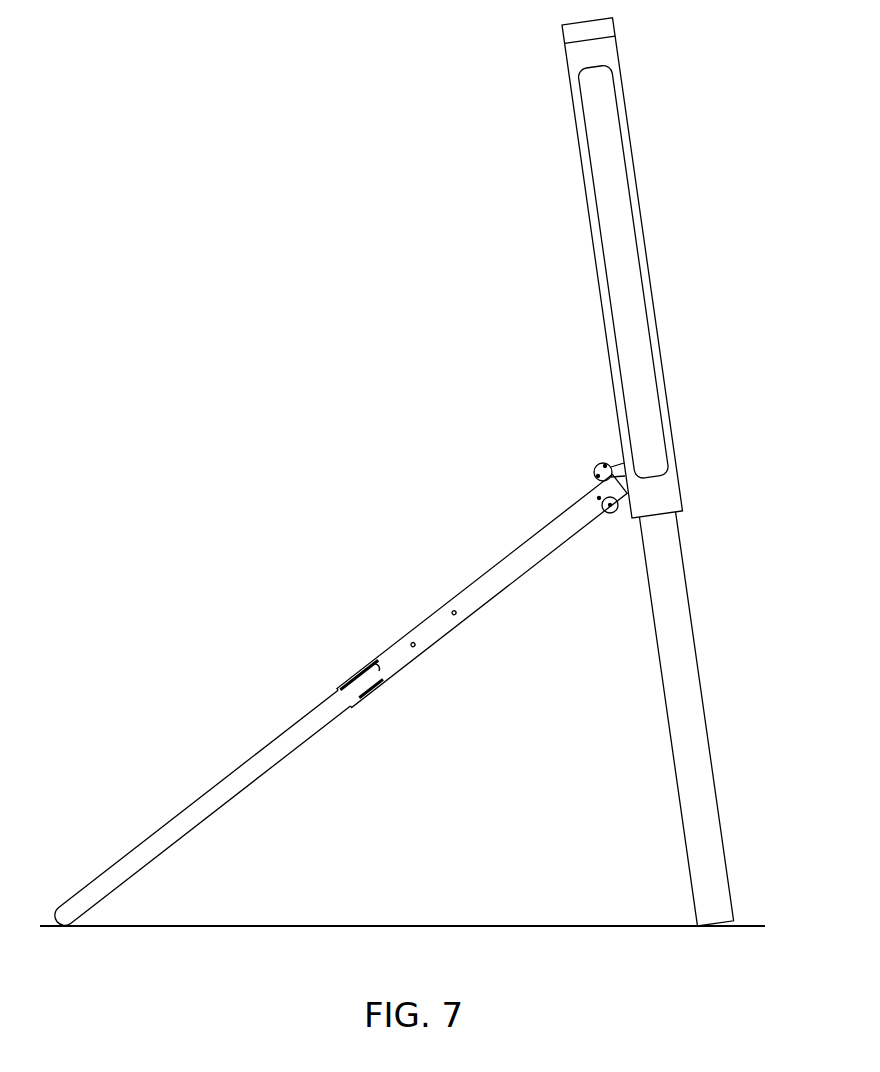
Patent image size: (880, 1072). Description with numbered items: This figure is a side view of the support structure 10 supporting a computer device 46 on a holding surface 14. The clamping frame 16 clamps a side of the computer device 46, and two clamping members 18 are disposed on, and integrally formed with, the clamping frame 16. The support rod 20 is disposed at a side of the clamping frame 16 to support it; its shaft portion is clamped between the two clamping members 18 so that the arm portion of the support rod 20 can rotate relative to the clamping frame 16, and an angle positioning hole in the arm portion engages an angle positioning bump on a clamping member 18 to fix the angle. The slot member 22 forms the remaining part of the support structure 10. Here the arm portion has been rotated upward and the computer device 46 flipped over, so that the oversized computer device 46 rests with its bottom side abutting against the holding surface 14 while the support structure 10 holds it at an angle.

The support structure 10 is at (518, 495).
The holding surface 14 is at (582, 927).
The clamping frame 16 is at (668, 493).
The clamping member 18 is at (598, 462).
The support rod 20 is at (470, 600).
The slot member 22 is at (268, 760).
The computer device 46 is at (680, 598).